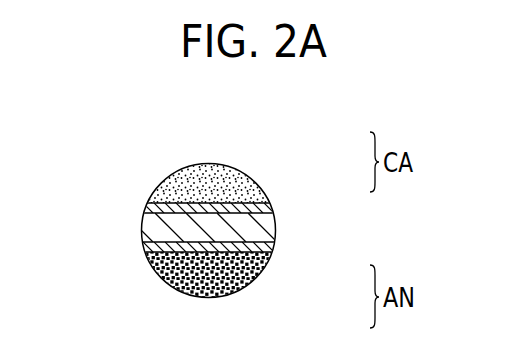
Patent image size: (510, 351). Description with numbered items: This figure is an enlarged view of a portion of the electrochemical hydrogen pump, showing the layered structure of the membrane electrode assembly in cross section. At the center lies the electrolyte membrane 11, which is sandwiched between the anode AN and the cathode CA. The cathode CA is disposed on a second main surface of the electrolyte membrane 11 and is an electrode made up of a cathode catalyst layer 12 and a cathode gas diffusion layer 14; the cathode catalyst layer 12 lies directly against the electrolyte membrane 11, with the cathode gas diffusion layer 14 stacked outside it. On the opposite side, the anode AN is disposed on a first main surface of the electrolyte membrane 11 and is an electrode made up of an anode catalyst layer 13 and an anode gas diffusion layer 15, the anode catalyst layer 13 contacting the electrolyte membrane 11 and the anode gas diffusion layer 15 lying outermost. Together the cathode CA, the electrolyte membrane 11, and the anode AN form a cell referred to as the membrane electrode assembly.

The cathode gas diffusion layer 14 is at (243, 173).
The cathode catalyst layer 12 is at (275, 210).
The electrolyte membrane 11 is at (275, 228).
The anode catalyst layer 13 is at (274, 248).
The anode gas diffusion layer 15 is at (252, 282).